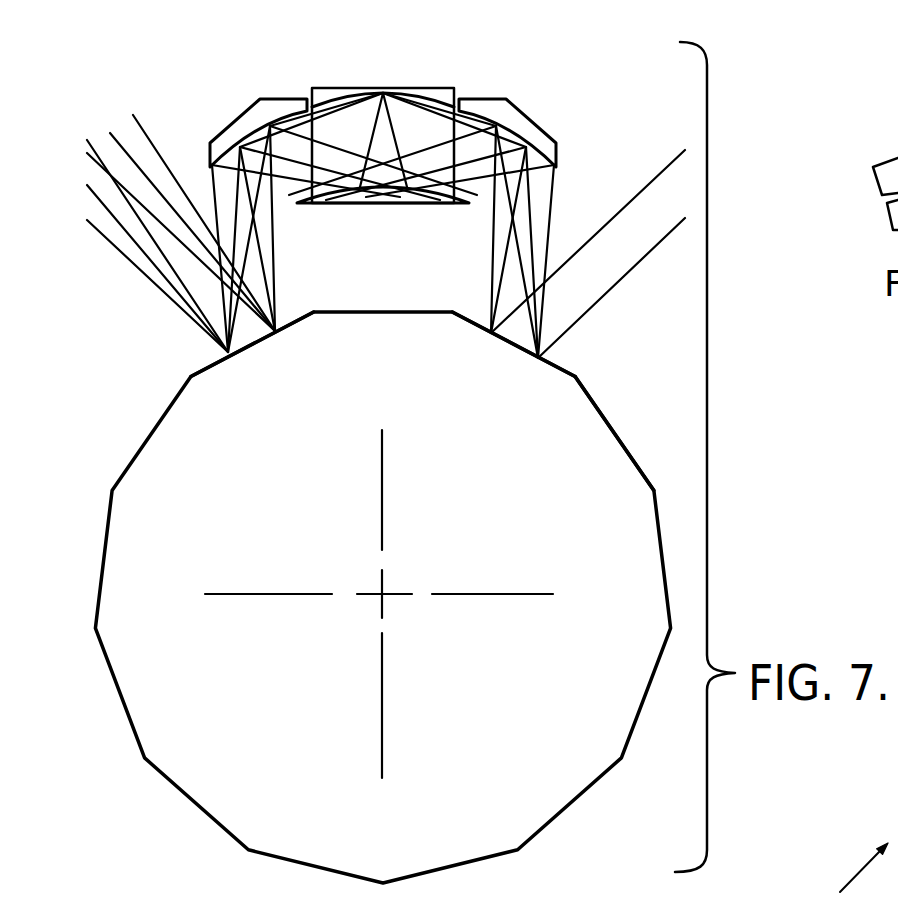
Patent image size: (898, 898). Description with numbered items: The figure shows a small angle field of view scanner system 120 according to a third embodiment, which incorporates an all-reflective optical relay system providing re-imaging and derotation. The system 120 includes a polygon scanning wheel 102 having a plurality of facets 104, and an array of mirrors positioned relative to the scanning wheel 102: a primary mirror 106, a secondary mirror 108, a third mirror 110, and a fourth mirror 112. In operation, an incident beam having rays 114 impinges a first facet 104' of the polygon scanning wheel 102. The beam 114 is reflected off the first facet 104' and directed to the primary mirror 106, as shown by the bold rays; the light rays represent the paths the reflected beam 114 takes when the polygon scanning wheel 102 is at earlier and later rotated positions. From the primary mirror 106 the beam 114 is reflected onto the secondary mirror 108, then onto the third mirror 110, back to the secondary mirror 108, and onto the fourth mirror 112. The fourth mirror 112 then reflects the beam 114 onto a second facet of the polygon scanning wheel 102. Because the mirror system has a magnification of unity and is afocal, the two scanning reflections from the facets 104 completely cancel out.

The polygon scanning wheel 102 is at (628, 477).
The facets 104 is at (614, 433).
The first facet 104' is at (389, 344).
The primary mirror 106 is at (548, 136).
The secondary mirror 108 is at (378, 208).
The third mirror 110 is at (430, 92).
The fourth mirror 112 is at (231, 125).
The rays 114 is at (638, 262).
The small angle field of view scanner system 120 is at (610, 96).